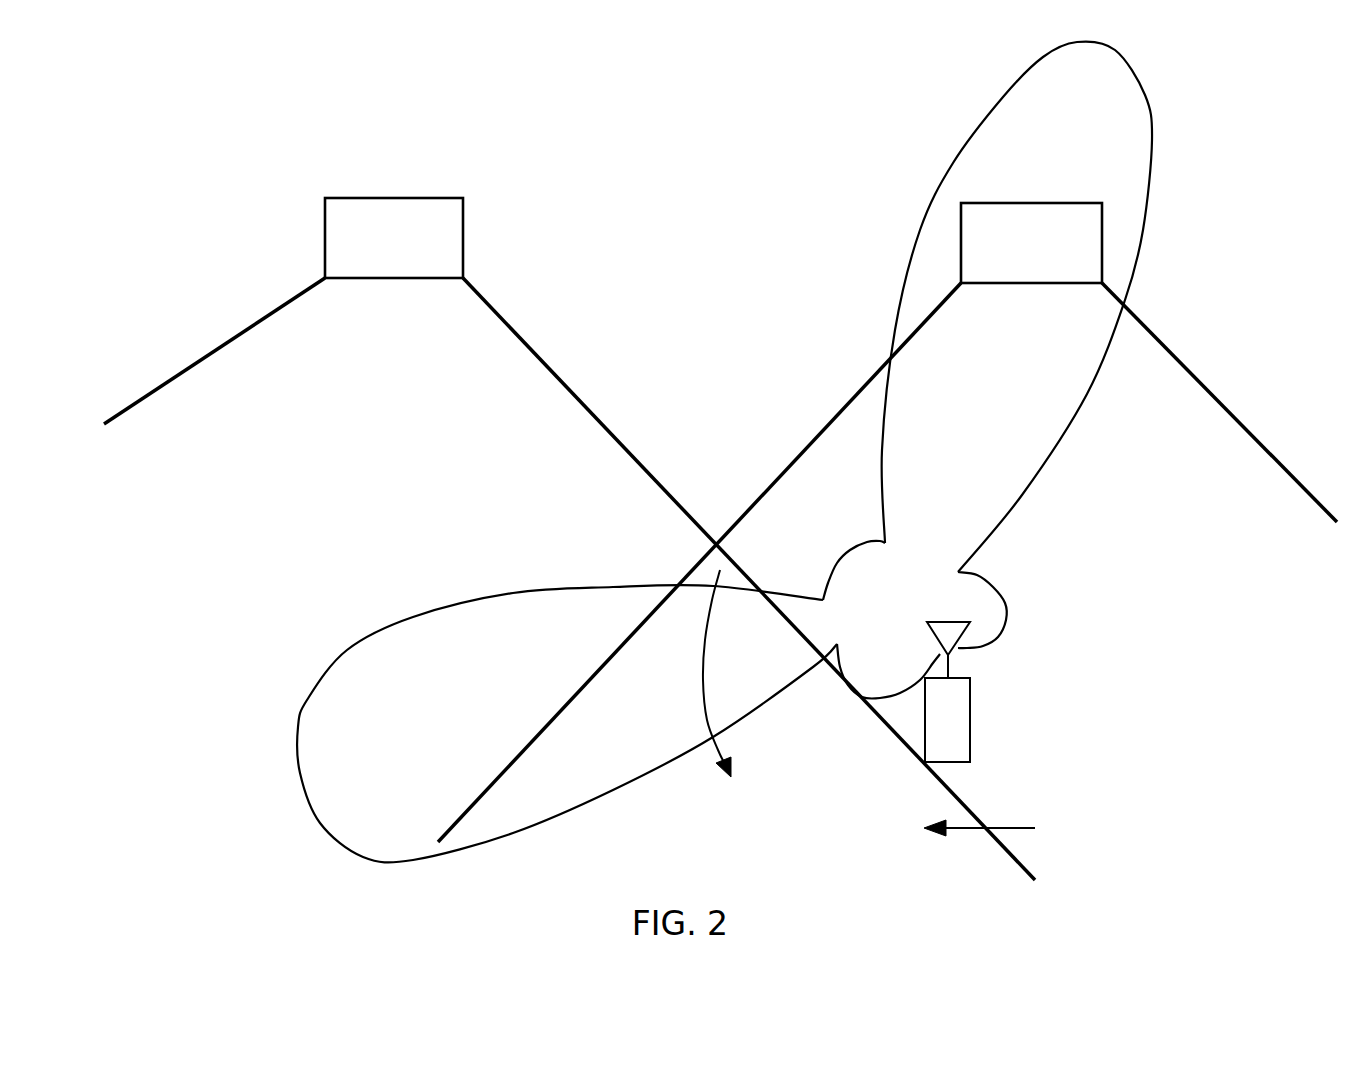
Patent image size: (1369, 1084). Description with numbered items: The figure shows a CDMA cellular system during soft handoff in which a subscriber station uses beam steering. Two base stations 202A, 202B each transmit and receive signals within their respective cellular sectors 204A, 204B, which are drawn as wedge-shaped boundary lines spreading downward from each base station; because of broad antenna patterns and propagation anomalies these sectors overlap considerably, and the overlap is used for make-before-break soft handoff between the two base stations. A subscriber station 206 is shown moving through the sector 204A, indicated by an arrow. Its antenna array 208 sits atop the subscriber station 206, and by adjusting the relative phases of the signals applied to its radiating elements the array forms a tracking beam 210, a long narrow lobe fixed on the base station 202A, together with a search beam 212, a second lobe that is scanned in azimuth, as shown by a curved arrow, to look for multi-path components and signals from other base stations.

The base station 202A is at (1018, 203).
The base station 202B is at (383, 198).
The cellular sector 204A is at (1178, 359).
The cellular sector 204B is at (547, 364).
The subscriber station 206 is at (958, 762).
The antenna array 208 is at (956, 650).
The tracking beam 210 is at (1056, 447).
The search beam 212 is at (454, 600).